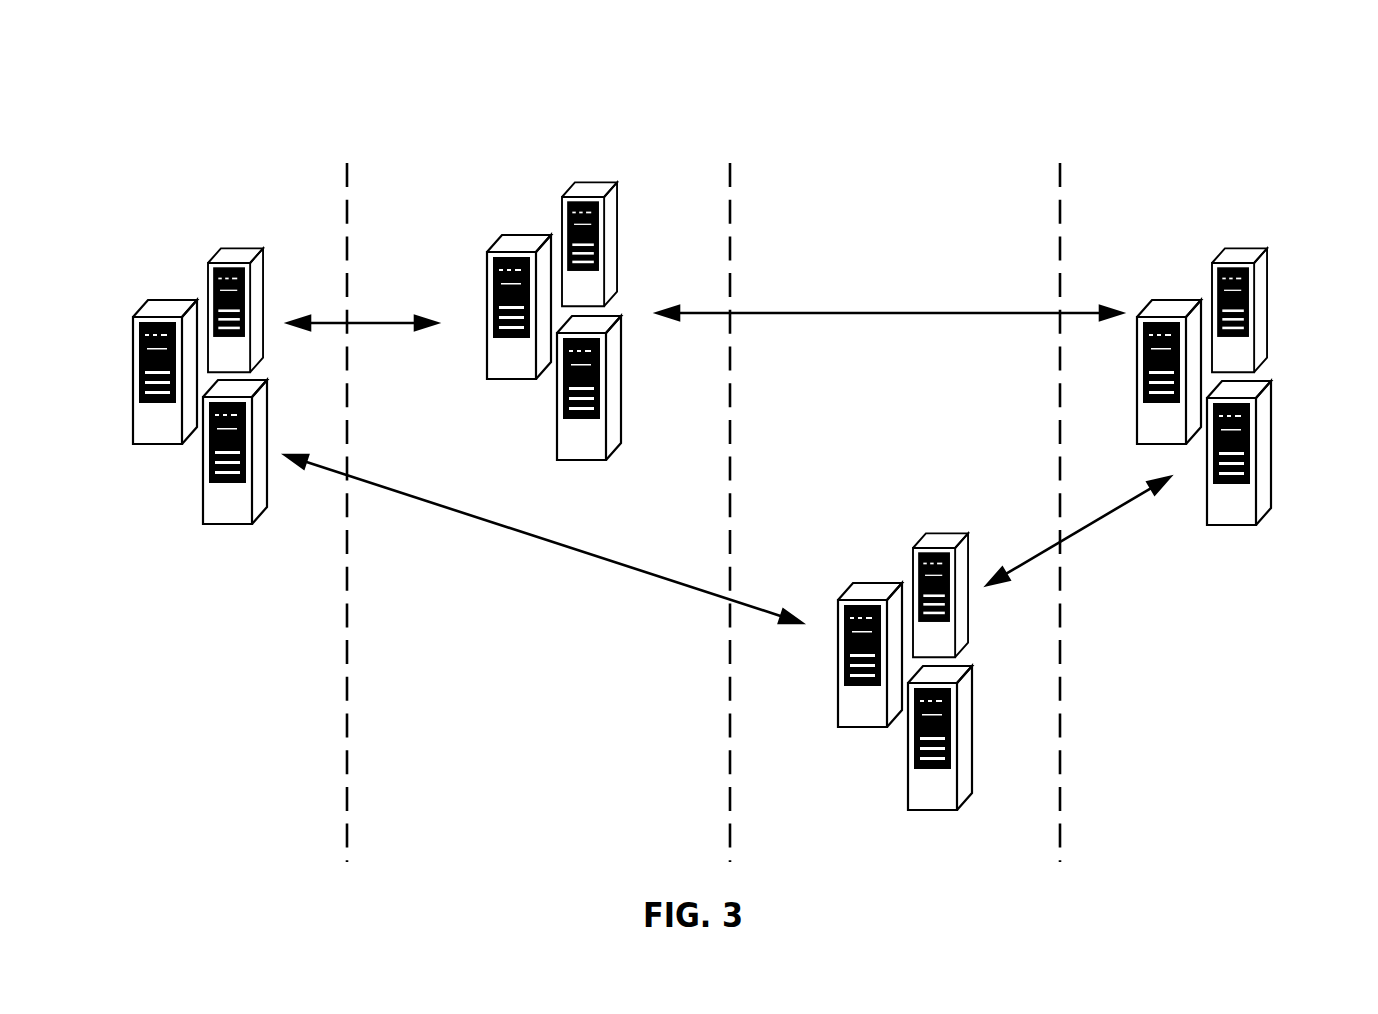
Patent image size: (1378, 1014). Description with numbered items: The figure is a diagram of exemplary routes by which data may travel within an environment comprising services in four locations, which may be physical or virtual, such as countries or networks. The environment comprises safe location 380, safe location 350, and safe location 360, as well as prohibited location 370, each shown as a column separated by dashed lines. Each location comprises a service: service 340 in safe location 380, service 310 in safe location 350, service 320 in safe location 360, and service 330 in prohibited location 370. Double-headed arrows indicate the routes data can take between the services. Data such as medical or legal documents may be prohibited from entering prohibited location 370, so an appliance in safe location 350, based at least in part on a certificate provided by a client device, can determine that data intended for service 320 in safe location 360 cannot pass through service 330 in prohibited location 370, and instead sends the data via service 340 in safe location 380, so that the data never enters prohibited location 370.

The service 310 is at (570, 190).
The service 320 is at (873, 583).
The service 330 is at (1220, 258).
The service 340 is at (212, 258).
The safe location 350 is at (595, 435).
The safe location 360 is at (932, 436).
The prohibited location 370 is at (1241, 40).
The safe location 380 is at (230, 437).